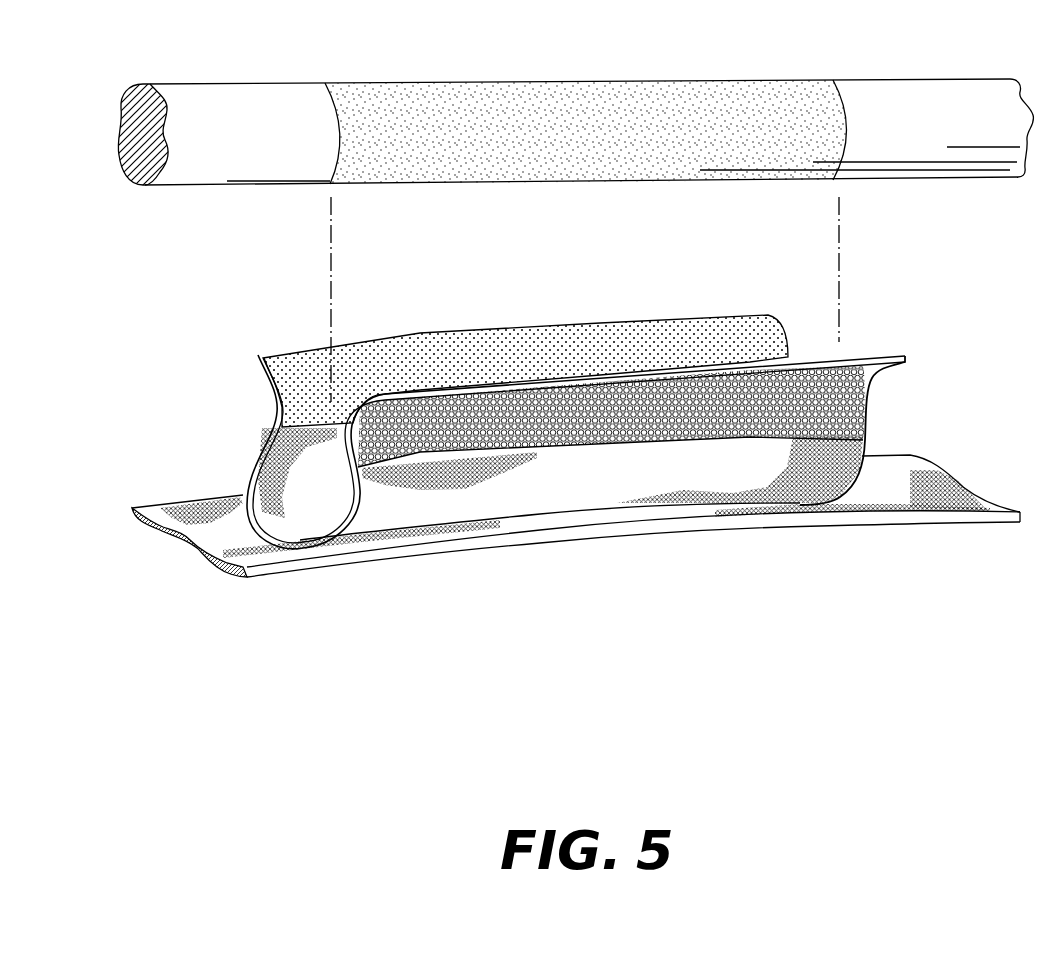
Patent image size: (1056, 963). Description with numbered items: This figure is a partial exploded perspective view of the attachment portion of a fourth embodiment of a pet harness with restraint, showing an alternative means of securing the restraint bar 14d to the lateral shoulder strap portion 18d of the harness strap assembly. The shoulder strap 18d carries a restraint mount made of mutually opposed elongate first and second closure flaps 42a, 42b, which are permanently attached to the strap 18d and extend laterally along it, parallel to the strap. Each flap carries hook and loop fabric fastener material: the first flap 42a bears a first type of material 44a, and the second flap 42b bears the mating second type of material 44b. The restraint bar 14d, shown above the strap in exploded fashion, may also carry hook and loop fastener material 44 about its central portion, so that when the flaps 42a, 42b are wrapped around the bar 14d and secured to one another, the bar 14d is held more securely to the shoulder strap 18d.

The restraint bar 14d is at (227, 85).
The hook and loop fastener material 44 is at (520, 98).
The first closure flap 42a is at (293, 348).
The second closure flap 42b is at (885, 356).
The first type of hook and loop material 44a is at (462, 348).
The second type of hook and loop material 44b is at (850, 402).
The lateral shoulder strap portion 18d is at (620, 537).